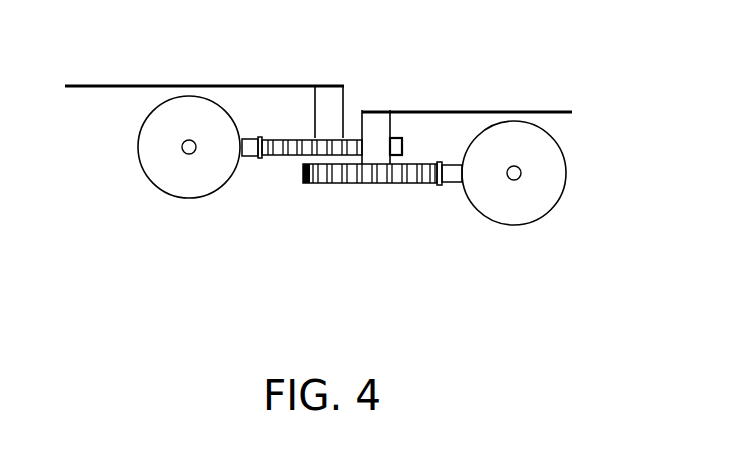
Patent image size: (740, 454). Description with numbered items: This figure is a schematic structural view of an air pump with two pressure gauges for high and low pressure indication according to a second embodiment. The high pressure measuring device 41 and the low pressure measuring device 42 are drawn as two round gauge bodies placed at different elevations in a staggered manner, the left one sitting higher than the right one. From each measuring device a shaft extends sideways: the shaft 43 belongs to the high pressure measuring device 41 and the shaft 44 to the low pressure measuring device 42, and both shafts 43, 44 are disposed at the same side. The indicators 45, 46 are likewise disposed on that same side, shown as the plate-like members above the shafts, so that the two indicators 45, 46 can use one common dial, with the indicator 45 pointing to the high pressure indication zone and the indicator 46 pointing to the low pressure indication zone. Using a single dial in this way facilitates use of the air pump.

The high pressure measuring device 41 is at (155, 142).
The low pressure measuring device 42 is at (540, 197).
The shaft 43 is at (332, 99).
The shaft 44 is at (382, 150).
The indicator 45 is at (257, 83).
The indicator 46 is at (463, 110).